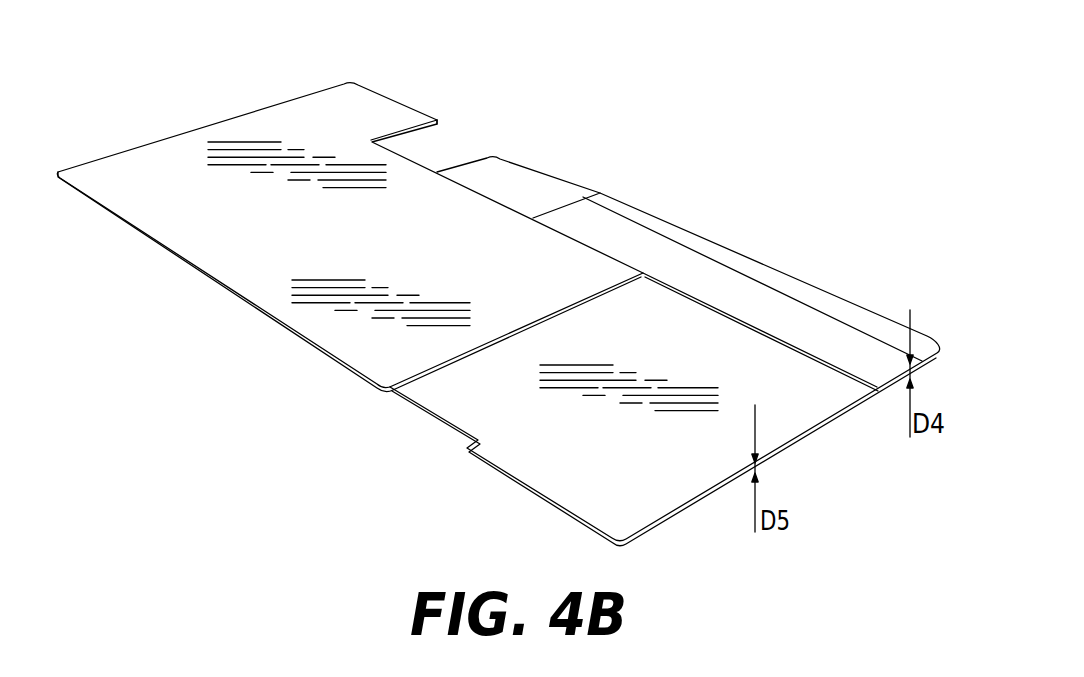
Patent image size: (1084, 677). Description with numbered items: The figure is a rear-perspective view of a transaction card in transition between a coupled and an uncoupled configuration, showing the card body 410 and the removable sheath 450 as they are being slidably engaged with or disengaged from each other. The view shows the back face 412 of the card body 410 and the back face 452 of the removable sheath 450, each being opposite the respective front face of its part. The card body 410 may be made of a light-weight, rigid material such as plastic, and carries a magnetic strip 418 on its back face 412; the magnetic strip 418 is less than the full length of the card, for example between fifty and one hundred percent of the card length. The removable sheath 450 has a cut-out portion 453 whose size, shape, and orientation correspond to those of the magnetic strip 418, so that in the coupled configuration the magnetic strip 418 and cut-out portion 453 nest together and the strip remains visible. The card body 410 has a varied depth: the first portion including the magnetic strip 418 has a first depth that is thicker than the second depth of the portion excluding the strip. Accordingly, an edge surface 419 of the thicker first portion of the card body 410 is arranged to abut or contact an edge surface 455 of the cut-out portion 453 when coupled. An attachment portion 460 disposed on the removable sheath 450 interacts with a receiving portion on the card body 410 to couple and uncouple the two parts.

The card body 410 is at (178, 167).
The back face 412 is at (644, 481).
The magnetic strip 418 is at (762, 310).
The edge surface 419 is at (833, 363).
The removable sheath 450 is at (658, 315).
The back face 452 is at (346, 236).
The cut-out portion 453 is at (440, 132).
The edge surface 455 is at (427, 162).
The attachment portion 460 is at (492, 198).